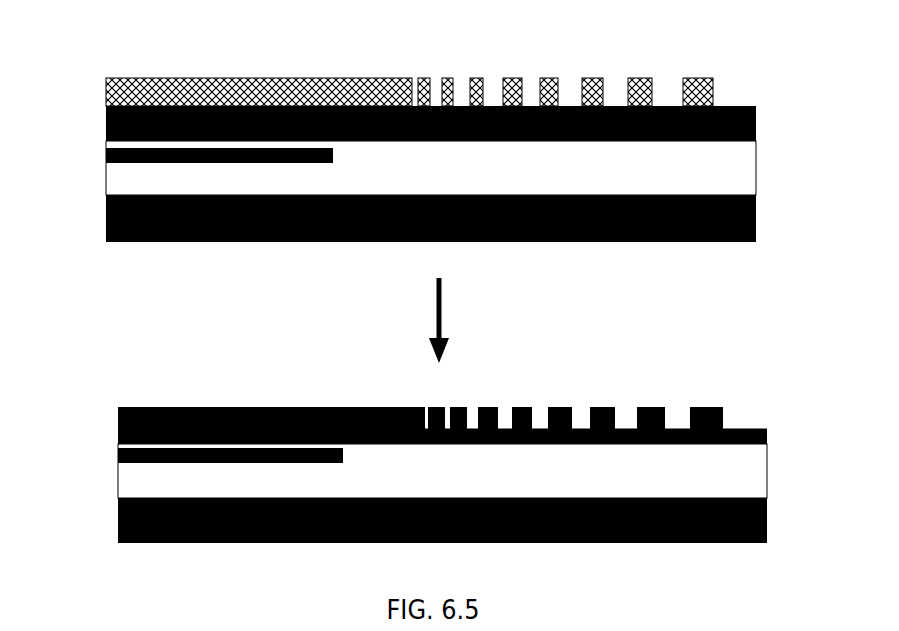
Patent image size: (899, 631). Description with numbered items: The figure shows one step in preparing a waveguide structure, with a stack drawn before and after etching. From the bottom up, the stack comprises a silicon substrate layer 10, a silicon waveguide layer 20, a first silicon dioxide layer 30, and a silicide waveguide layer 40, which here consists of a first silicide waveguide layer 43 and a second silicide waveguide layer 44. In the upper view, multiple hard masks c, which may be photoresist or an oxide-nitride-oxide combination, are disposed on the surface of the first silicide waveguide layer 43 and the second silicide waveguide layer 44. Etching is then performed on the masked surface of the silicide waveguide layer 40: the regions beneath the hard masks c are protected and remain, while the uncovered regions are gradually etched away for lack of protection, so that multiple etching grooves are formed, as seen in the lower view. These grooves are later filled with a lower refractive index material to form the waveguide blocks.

The silicon substrate layer 10 is at (106, 188).
The silicon waveguide layer 20 is at (106, 152).
The first silicon dioxide layer 30 is at (106, 135).
The silicide waveguide layer 40 is at (431, 270).
The first silicide waveguide layer 43 is at (757, 140).
The second silicide waveguide layer 44 is at (757, 107).
The hard mask c is at (132, 78).